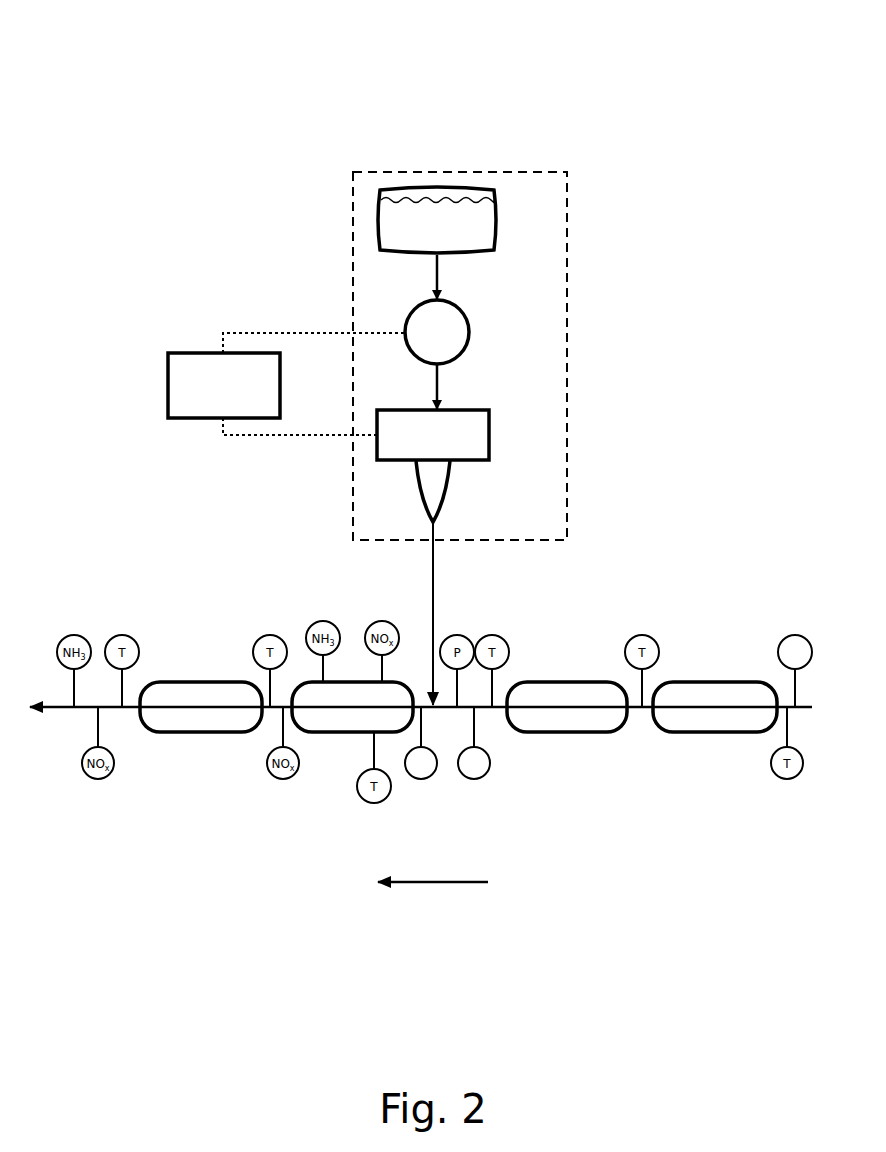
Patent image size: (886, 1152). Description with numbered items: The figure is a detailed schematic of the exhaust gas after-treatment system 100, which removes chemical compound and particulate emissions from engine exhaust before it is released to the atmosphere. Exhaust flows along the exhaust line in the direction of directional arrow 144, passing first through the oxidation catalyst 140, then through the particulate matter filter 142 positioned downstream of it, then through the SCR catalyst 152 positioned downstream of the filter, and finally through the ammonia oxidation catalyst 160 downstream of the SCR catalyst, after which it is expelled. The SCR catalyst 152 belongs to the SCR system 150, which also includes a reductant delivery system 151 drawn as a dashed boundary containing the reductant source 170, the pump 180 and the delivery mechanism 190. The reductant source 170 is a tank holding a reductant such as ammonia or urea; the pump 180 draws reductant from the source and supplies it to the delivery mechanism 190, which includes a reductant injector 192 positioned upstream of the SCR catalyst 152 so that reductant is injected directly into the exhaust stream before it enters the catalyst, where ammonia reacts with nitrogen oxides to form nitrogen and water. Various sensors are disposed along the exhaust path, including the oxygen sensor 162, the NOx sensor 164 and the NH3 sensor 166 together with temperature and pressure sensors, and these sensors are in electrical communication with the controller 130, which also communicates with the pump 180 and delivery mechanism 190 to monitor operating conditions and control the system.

The exhaust gas after-treatment system 100 is at (90, 62).
The controller 130 is at (286, 384).
The oxidation catalyst 140 is at (702, 734).
The particulate matter (PM) filter 142 is at (562, 734).
The directional arrow 144 is at (443, 884).
The SCR system 150 is at (258, 272).
The reductant delivery system 151 is at (516, 172).
The SCR catalyst 152 is at (333, 734).
The ammonia oxidation (AMOX) catalyst 160 is at (190, 734).
The oxygen sensor 162 is at (474, 781).
The NOx sensor 164 is at (795, 634).
The NH3 sensor 166 is at (420, 781).
The reductant source 170 is at (497, 222).
The pump 180 is at (437, 332).
The delivery mechanism 190 is at (491, 434).
The reductant injector 192 is at (448, 496).